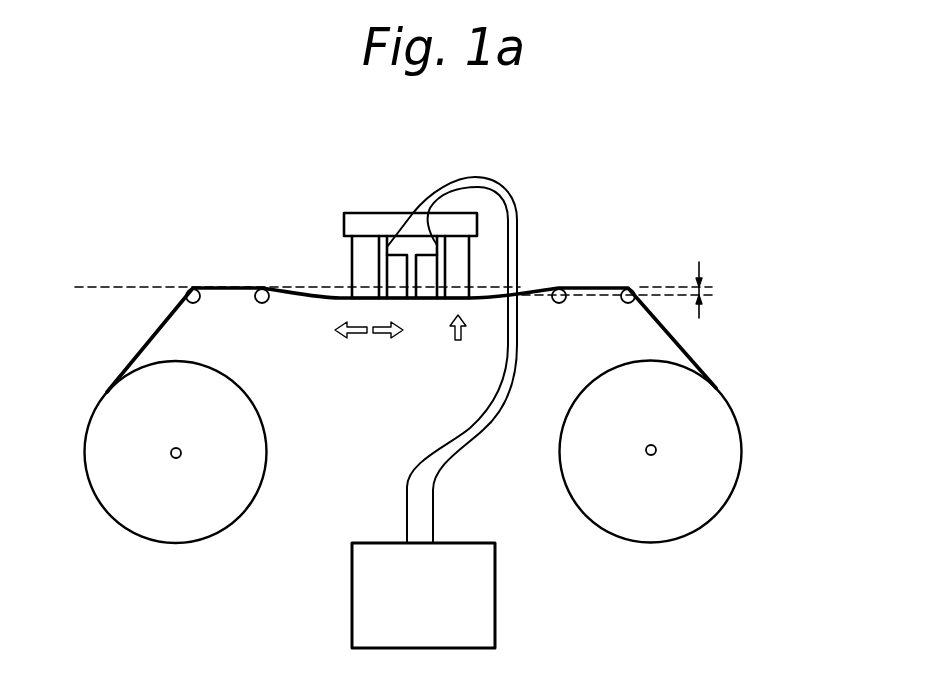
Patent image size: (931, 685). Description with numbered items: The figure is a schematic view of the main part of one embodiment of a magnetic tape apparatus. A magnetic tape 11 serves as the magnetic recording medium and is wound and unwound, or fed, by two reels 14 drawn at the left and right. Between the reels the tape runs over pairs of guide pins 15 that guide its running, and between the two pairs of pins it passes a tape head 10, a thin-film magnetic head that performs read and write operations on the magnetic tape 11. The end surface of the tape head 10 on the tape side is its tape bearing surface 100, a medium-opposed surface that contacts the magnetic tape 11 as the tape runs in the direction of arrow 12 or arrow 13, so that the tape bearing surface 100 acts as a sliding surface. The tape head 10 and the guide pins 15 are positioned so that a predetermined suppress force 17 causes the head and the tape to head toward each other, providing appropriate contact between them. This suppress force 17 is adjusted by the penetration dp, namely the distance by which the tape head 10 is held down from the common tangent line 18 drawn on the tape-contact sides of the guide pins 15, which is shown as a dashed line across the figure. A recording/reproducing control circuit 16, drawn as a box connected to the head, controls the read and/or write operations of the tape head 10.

The tape head 10 is at (390, 184).
The magnetic tape 11 is at (684, 345).
The arrow 12 is at (332, 330).
The arrow 13 is at (404, 330).
The reels 14 is at (267, 462).
The guide pins 15 is at (262, 287).
The recording/reproducing control circuit 16 is at (485, 612).
The suppress force 17 is at (475, 330).
The common tangent line 18 is at (128, 287).
The tape bearing surface 100 is at (440, 300).
The penetration dp is at (712, 288).